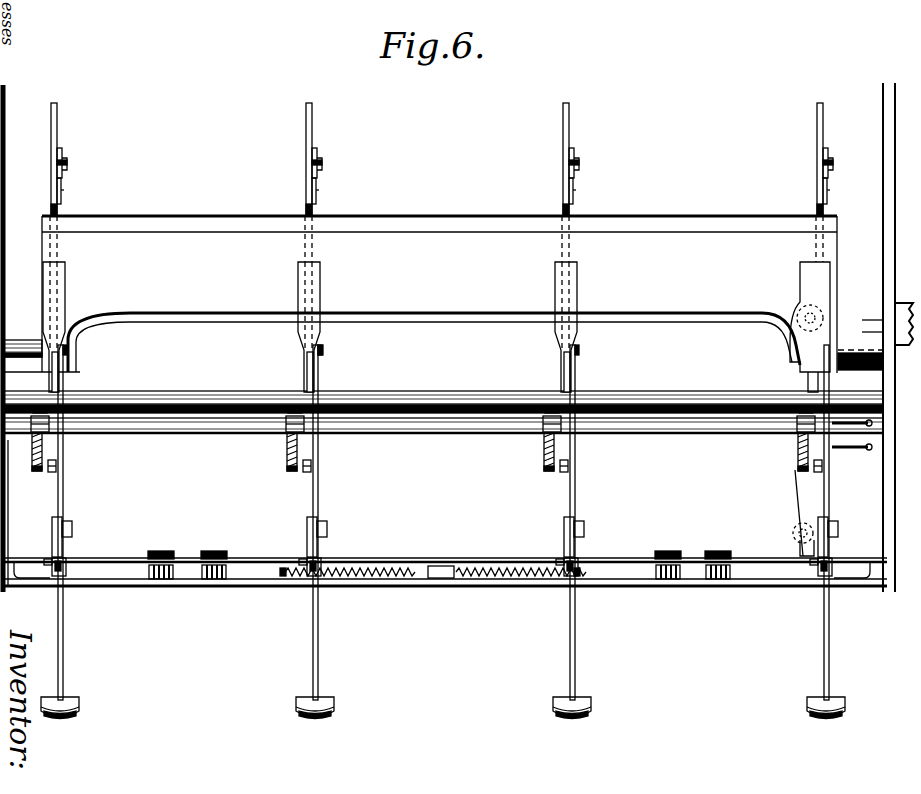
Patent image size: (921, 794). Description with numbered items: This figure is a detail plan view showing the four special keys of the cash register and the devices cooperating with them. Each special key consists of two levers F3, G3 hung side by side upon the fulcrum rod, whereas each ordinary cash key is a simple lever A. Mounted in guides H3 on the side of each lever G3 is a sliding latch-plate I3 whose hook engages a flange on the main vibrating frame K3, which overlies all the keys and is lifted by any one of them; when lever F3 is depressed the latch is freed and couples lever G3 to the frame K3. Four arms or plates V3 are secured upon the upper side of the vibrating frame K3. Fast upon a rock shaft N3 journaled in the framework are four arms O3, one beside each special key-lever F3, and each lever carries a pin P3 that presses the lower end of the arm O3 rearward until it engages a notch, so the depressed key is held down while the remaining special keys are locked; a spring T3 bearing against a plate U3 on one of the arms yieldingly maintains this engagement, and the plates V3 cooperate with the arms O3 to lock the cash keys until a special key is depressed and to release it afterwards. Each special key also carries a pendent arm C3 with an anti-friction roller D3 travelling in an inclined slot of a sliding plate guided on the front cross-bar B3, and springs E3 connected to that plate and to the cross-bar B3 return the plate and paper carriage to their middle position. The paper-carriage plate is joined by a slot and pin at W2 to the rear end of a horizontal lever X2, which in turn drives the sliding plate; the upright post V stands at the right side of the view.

The lever G3 is at (51, 130).
The guides H3 is at (66, 164).
The sliding latch-plate I3 is at (63, 195).
The main vibrating frame K3 is at (434, 314).
The arms or plates V3 is at (63, 292).
The slot and pin connection W2 is at (805, 326).
The post V is at (898, 312).
The plate U3 is at (40, 408).
The spring T3 is at (33, 432).
The arms O3 is at (63, 458).
The rock shaft N3 is at (168, 432).
The pin or lug P3 is at (50, 472).
The horizontal lever X2 is at (797, 502).
The pendent arm C3 is at (306, 536).
The lever A is at (412, 562).
The front cross-bar B3 is at (456, 582).
The springs E3 is at (402, 580).
The anti-friction roller D3 is at (54, 572).
The lever F3 is at (64, 633).